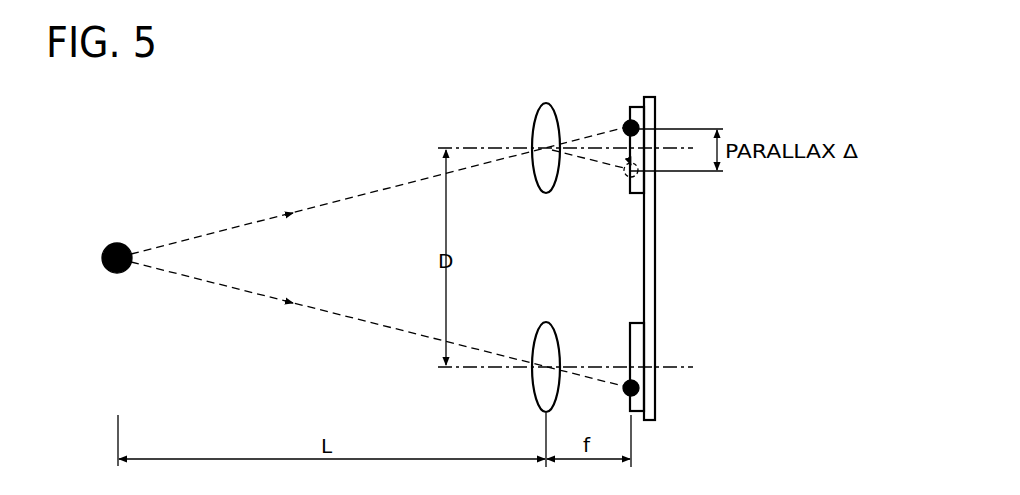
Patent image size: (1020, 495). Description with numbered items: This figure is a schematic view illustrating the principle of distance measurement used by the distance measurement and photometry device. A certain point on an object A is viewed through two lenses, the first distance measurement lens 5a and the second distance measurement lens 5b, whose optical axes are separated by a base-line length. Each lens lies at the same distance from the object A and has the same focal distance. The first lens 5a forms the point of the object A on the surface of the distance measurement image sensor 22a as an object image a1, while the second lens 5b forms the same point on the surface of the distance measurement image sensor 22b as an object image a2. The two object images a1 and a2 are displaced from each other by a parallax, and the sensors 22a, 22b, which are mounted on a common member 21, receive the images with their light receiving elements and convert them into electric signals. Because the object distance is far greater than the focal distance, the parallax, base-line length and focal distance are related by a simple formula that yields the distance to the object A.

The object A is at (117, 243).
The first distance measurement lens 5a is at (541, 327).
The second distance measurement lens 5b is at (541, 108).
The distance measurement image sensor 22a is at (630, 341).
The distance measurement image sensor 22b is at (630, 113).
The substrate / sensor board 21 is at (656, 256).
The object image a1 is at (623, 172).
The object image a2 is at (622, 127).